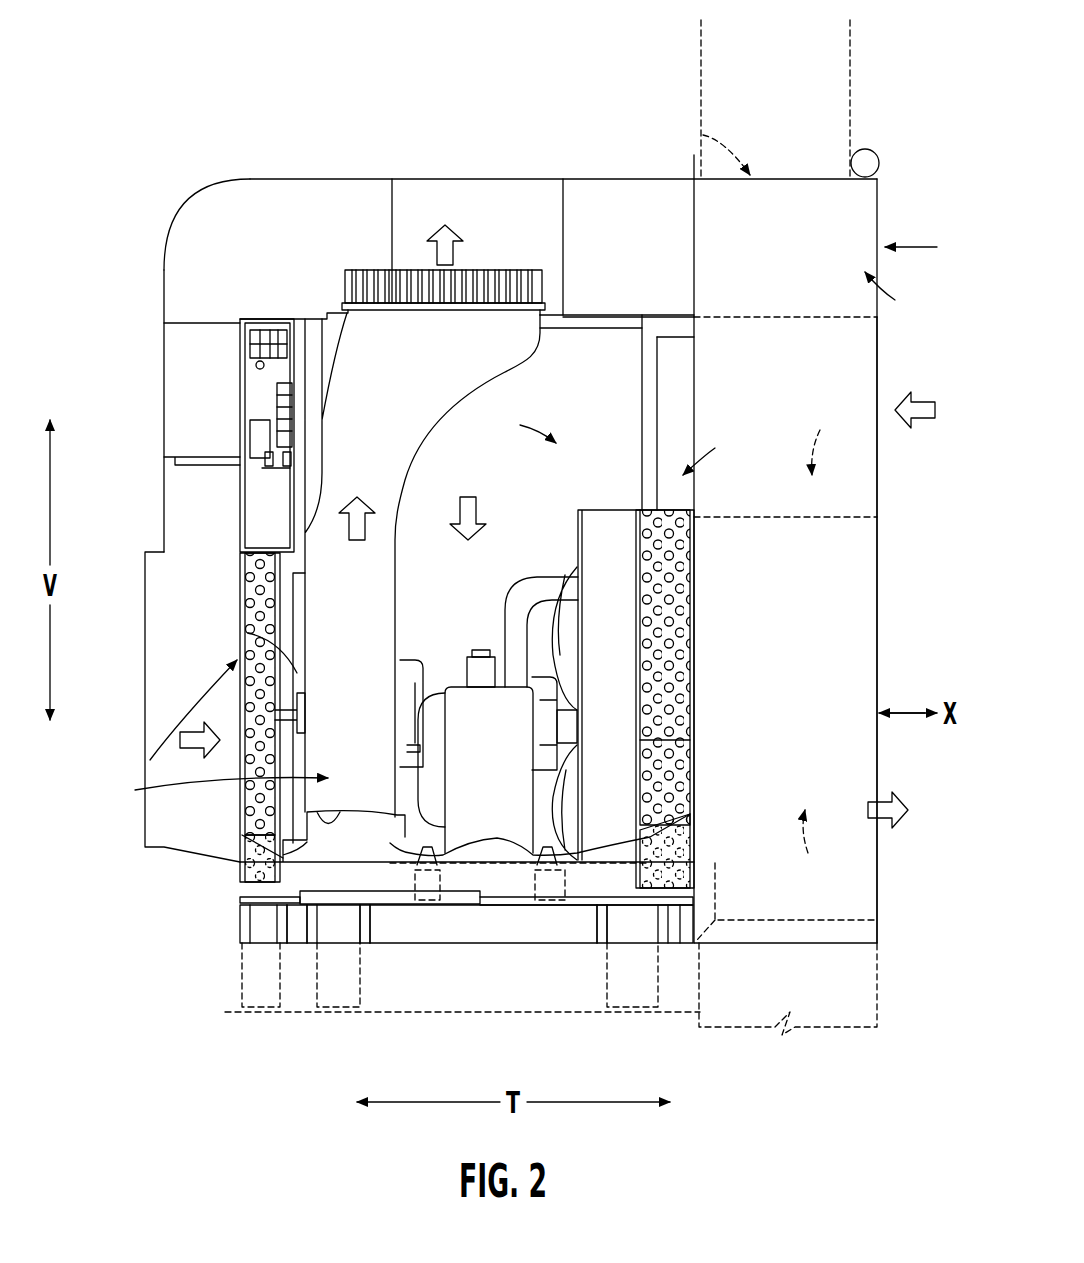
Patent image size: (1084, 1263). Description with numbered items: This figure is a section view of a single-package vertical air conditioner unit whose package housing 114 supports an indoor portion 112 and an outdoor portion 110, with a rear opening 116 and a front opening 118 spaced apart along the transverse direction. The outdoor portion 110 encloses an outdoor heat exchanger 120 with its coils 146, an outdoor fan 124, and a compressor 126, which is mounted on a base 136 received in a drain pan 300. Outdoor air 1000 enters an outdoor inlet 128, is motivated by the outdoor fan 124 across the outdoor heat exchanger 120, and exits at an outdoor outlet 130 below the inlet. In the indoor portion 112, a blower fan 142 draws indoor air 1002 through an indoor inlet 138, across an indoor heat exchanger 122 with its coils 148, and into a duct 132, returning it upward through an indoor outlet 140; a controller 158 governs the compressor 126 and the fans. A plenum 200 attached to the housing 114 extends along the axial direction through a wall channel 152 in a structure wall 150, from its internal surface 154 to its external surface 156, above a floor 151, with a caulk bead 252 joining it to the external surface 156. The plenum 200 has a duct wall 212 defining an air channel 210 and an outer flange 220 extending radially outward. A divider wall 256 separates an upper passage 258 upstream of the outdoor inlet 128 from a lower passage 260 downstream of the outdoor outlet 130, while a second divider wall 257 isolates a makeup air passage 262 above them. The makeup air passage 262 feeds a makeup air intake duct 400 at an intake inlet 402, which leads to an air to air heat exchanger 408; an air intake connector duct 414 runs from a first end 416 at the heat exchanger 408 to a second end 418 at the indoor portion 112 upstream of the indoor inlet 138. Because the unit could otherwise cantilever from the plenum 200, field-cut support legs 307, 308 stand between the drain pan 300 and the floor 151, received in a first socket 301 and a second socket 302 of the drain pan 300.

The outdoor portion 110 is at (524, 420).
The indoor portion 112 is at (224, 562).
The package housing 114 is at (590, 315).
The rear opening 116 is at (685, 790).
The front opening 118 is at (248, 812).
The outdoor heat exchanger 120 is at (655, 510).
The indoor heat exchanger 122 is at (276, 606).
The outdoor fan 124 is at (560, 600).
The compressor 126 is at (455, 690).
The outdoor inlet 128 is at (718, 447).
The outdoor outlet 130 is at (692, 748).
The duct 132 is at (500, 358).
The base 136 is at (310, 900).
The indoor inlet 138 is at (164, 707).
The indoor outlet 140 is at (343, 290).
The blower fan 142 is at (255, 660).
The coils 146 is at (680, 580).
The coils 148 is at (276, 630).
The structure wall 150 is at (860, 993).
The floor 151 is at (455, 1015).
The wall channel 152 is at (726, 137).
The internal surface 154 is at (705, 75).
The external surface 156 is at (853, 75).
The controller 158 is at (277, 405).
The plenum 200 is at (860, 888).
The air channel 210 is at (738, 930).
The duct wall 212 is at (862, 365).
The outer flange 220 is at (690, 170).
The caulk bead 252 is at (880, 163).
The divider wall 256 is at (820, 520).
The second divider wall 257 is at (795, 320).
The upper passage 258 is at (812, 434).
The lower passage 260 is at (815, 847).
The makeup air passage 262 is at (906, 293).
The drain pan 300 is at (238, 922).
The first socket 301 is at (372, 918).
The second socket 302 is at (292, 935).
The support leg 307 is at (360, 985).
The support leg 308 is at (242, 975).
The makeup air intake duct 400 is at (578, 185).
The intake inlet 402 is at (697, 255).
The air to air heat exchanger 408 is at (503, 185).
The air intake connector duct 414 is at (213, 205).
The first end 416 is at (388, 190).
The second end 418 is at (190, 467).
The outdoor air 1000 is at (918, 247).
The indoor air 1002 is at (450, 222).